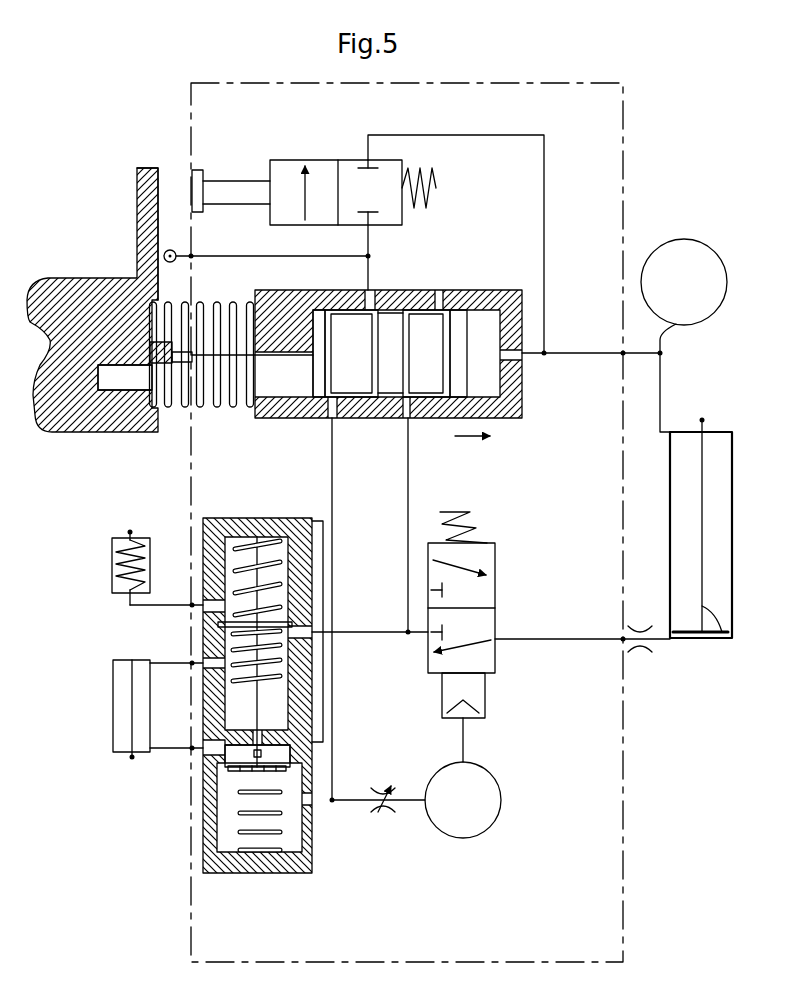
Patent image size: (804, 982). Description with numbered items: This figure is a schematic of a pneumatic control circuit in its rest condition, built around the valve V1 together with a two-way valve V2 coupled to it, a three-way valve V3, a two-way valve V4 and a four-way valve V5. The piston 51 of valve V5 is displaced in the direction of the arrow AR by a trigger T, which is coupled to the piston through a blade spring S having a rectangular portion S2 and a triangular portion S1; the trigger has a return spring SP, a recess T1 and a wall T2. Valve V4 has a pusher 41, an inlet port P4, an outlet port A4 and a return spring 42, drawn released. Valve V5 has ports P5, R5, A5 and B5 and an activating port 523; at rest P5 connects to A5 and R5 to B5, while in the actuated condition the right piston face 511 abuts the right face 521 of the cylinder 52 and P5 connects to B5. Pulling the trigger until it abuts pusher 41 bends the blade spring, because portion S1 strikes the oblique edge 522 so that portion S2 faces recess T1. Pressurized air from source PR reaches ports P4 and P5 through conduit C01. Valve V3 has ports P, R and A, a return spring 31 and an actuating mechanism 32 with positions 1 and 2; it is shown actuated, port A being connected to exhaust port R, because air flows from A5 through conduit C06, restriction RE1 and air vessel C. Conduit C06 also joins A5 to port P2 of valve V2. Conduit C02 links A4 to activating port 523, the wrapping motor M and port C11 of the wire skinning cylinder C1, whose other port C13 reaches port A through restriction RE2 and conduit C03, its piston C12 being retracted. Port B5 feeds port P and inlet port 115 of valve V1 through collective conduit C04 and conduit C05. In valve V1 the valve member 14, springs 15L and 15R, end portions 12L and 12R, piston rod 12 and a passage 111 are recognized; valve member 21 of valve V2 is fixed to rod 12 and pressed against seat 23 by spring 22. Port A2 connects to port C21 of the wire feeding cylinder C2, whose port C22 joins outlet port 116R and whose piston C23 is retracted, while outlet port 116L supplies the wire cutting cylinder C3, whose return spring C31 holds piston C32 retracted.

The trigger T is at (104, 282).
The recess of trigger T1 is at (120, 382).
The tank wall T2 is at (157, 210).
The return spring SP is at (182, 412).
The blade spring S is at (207, 410).
The triangular portion S1 is at (245, 335).
The rectangular portion S2 is at (183, 305).
The source PR is at (265, 243).
The conduit C01 is at (265, 258).
The pusher 41 is at (238, 178).
The two-way valve V4 is at (402, 170).
The outlet port A4 is at (365, 160).
The return spring 42 is at (436, 195).
The inlet port P4 is at (370, 232).
The conduit C02 is at (546, 200).
The four-way valve V5 is at (522, 405).
The piston 51 is at (468, 320).
The port R5 is at (440, 300).
The port P5 is at (372, 300).
The oblique edge 522 is at (281, 385).
The right face 521 is at (482, 341).
The right piston face 511 is at (481, 385).
The valve cylinder 52 is at (544, 318).
The activating port 523 is at (544, 356).
The port A5 is at (337, 420).
The port B5 is at (410, 420).
The arrow AR is at (475, 451).
The wrapping motor M is at (684, 335).
The wire skinning cylinder C1 is at (680, 553).
The port C11 is at (668, 432).
The piston C12 is at (722, 637).
The port C13 is at (672, 641).
The conduit C03 is at (562, 639).
The restriction RE2 is at (640, 650).
The port A is at (495, 639).
The three-way valve V3 is at (497, 567).
The valve position 1 is at (482, 558).
The valve position 2 is at (483, 661).
The return spring 31 is at (463, 516).
The actuating mechanism 32 is at (478, 682).
The air vessel C is at (463, 800).
The port P is at (428, 630).
The exhaust port R is at (432, 650).
The collective conduit C04 is at (410, 506).
The conduit C05 is at (350, 633).
The conduit C06 is at (334, 504).
The port P2 is at (334, 802).
The restriction RE1 is at (383, 806).
The valve V1 is at (321, 520).
The two-way valve V2 is at (201, 858).
The end portion 12L is at (256, 536).
The spring 15L is at (268, 562).
The valve member 14 is at (296, 624).
The inlet port 115 is at (318, 628).
The spring 15R is at (290, 670).
The passage 111 is at (302, 648).
The end portion 12R is at (290, 700).
The piston rod 12 is at (225, 762).
The seat 23 is at (292, 769).
The valve member 21 is at (240, 800).
The spring 22 is at (310, 868).
The port A2 is at (203, 746).
The wire cutting cylinder C3 is at (150, 548).
The return spring C31 is at (128, 540).
The piston C32 is at (125, 592).
The outlet port 116L is at (203, 602).
The wire feeding cylinder C2 is at (113, 665).
The piston C23 is at (132, 660).
The port C22 is at (153, 662).
The port C21 is at (146, 752).
The outlet port 116R is at (203, 668).